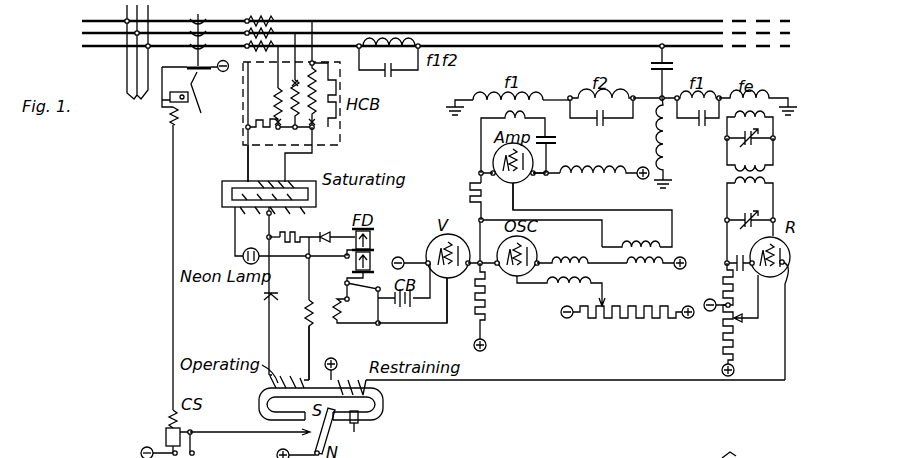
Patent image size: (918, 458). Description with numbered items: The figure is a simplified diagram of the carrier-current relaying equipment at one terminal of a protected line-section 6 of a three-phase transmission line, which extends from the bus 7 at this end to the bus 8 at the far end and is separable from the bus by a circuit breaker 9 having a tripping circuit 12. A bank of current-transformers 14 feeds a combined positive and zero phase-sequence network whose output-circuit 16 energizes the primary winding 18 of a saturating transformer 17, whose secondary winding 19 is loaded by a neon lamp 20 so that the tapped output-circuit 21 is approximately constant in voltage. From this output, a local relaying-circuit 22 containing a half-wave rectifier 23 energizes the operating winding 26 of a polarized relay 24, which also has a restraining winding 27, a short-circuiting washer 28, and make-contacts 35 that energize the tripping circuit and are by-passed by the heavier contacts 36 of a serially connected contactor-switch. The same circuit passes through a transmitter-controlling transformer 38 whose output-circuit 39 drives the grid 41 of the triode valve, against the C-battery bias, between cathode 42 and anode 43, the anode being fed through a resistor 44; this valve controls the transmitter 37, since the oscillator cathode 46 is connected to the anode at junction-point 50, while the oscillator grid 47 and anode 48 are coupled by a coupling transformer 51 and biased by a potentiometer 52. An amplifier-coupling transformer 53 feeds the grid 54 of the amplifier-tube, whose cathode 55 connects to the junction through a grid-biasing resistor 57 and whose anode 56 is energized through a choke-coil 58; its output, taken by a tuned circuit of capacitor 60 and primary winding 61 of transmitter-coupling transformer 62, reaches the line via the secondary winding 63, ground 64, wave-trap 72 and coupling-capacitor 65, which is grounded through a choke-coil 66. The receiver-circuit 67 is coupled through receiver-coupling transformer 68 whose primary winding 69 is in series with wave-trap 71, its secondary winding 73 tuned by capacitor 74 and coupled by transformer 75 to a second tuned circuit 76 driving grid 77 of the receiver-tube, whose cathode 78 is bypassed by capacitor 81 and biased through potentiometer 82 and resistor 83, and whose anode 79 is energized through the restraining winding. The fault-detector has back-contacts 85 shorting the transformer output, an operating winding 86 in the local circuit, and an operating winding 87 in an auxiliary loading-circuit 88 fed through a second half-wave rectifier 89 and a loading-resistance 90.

The protected line-section 6 is at (547, 23).
The bus 7 is at (137, 61).
The bus 8 is at (734, 445).
The circuit breaker 9 is at (195, 56).
The tripping circuit 12 is at (175, 144).
The current-transformers 14 is at (279, 22).
The output-circuit 16 is at (285, 163).
The saturating transformer 17 is at (222, 192).
The primary winding 18 is at (289, 178).
The secondary winding 19 is at (240, 210).
The neon lamp 20 is at (256, 240).
The output-circuit 21 is at (306, 224).
The local relaying-circuit 22 is at (310, 344).
The half-wave rectifier 23 is at (263, 296).
The polarized relay 24 is at (259, 405).
The operating winding 26 is at (288, 384).
The restraining winding 27 is at (344, 377).
The short-circuiting washer 28 is at (355, 432).
The make-contacts 35 is at (311, 436).
The contacts 36 is at (199, 457).
The carrier-current transmitter 37 is at (605, 154).
The transmitter-controlling transformer 38 is at (321, 327).
The output-circuit 39 is at (360, 323).
The grid 41 is at (459, 300).
The cathode 42 is at (433, 245).
The anode 43 is at (458, 240).
The resistor 44 is at (485, 313).
The cathode 46 is at (492, 281).
The grid 47 is at (520, 245).
The anode 48 is at (532, 252).
The junction-point 50 is at (482, 258).
The coupling transformer 51 is at (594, 280).
The potentiometer 52 is at (623, 313).
The amplifier-coupling transformer 53 is at (662, 252).
The grid 54 is at (511, 185).
The cathode 55 is at (492, 158).
The anode 56 is at (537, 165).
The grid-biasing resistor 57 is at (470, 190).
The choke-coil 58 is at (608, 180).
The capacitor 60 is at (553, 134).
The primary winding 61 is at (500, 118).
The transmitter-coupling transformer 62 is at (537, 110).
The secondary winding 63 is at (529, 97).
The ground 64 is at (458, 97).
The coupling-capacitor 65 is at (673, 68).
The choke-coil 66 is at (671, 154).
The receiver-circuit 67 is at (719, 161).
The receiver-coupling transformer 68 is at (774, 107).
The primary winding 69 is at (765, 93).
The parallel-resonant wave-trap 71 is at (719, 94).
The parallel-resonant wave-trap 72 is at (617, 101).
The secondary winding 73 is at (736, 119).
The capacitor 74 is at (767, 142).
The transformer 75 is at (772, 172).
The second tuned circuit 76 is at (727, 206).
The grid 77 is at (769, 277).
The cathode 78 is at (740, 250).
The anode 79 is at (780, 308).
The carrier-frequency bypassing capacitor 81 is at (746, 298).
The potentiometer 82 is at (722, 333).
The resistor 83 is at (723, 283).
The back-contacts 85 is at (372, 273).
The operating winding 86 is at (375, 255).
The operating winding 87 is at (374, 240).
The auxiliary loading-circuit 88 is at (333, 232).
The half-wave rectifier 89 is at (327, 232).
The loading-resistance 90 is at (299, 244).